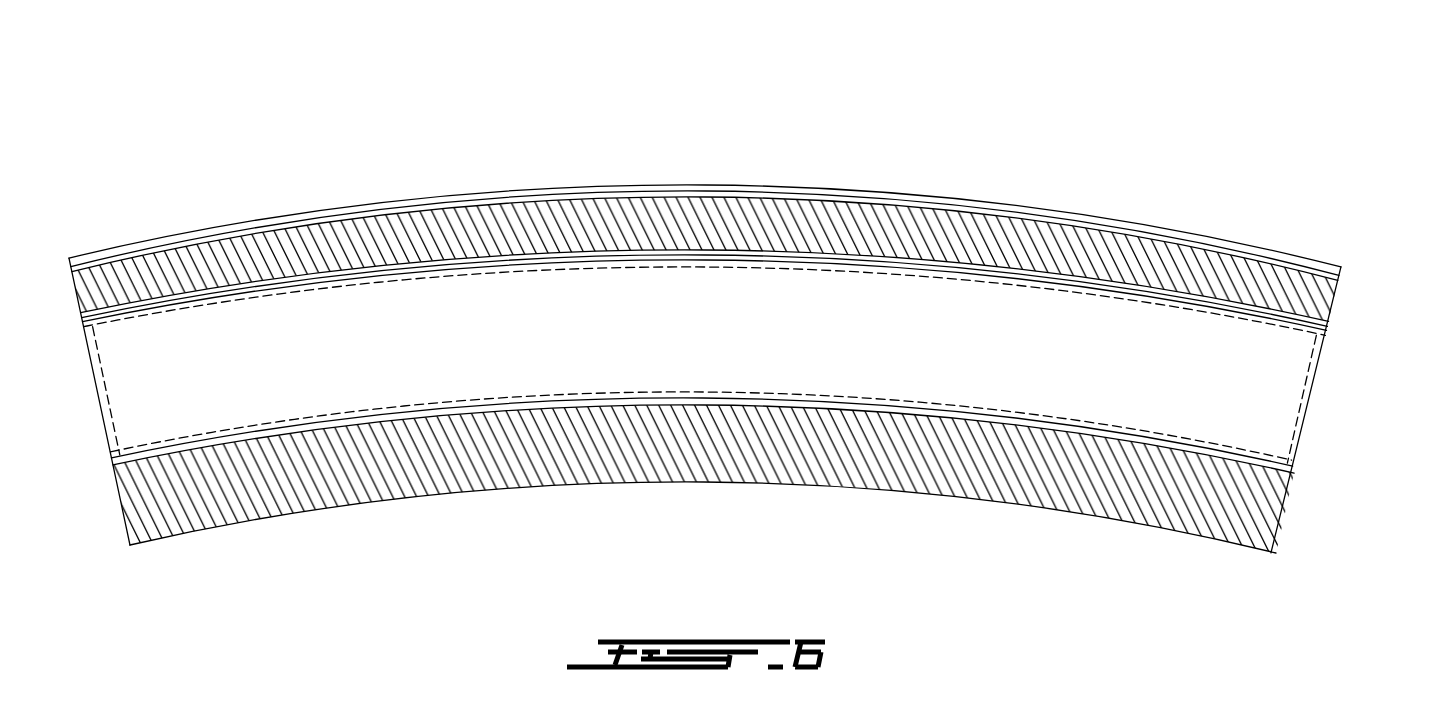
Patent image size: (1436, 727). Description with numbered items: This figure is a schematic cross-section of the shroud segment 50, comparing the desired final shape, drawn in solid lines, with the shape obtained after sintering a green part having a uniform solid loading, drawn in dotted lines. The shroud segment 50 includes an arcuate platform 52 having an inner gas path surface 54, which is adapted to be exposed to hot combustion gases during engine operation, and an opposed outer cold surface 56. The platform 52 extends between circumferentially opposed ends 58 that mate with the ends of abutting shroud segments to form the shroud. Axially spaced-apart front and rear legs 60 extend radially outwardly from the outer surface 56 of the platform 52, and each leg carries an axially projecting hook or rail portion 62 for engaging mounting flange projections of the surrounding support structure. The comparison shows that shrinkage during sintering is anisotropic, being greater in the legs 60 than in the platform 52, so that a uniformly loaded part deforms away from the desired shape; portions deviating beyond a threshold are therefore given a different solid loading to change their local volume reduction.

The shroud segment 50 is at (751, 315).
The arcuate platform 52 is at (753, 494).
The inner gas path surface 54 is at (788, 485).
The outer cold surface 56 is at (1177, 447).
The circumferentially opposed ends 58 is at (1302, 437).
The front and rear legs 60 is at (1323, 352).
The hook or rail portion 62 is at (1185, 265).